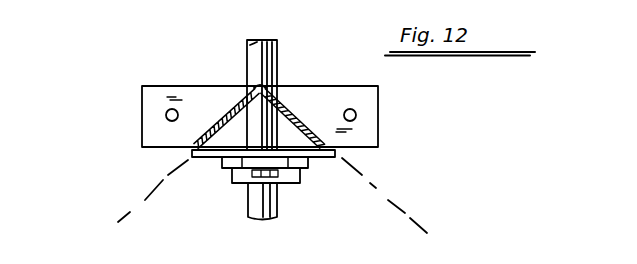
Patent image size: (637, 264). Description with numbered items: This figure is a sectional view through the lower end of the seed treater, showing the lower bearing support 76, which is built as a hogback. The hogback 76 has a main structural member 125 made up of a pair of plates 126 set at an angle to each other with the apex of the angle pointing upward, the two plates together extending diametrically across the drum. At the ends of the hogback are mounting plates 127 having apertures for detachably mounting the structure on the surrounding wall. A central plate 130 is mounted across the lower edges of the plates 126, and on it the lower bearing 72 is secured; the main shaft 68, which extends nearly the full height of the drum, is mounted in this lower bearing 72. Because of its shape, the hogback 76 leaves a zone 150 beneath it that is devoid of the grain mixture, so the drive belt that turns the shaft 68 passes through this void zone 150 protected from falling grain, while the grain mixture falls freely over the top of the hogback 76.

The main shaft 68 is at (247, 56).
The lower bearing support 76 is at (262, 86).
The plates 126 is at (229, 114).
The mounting plates 127 is at (142, 108).
The main structural member 125 is at (195, 131).
The plate 130 is at (332, 158).
The lower bearing 72 is at (220, 165).
The zone 150 is at (178, 220).